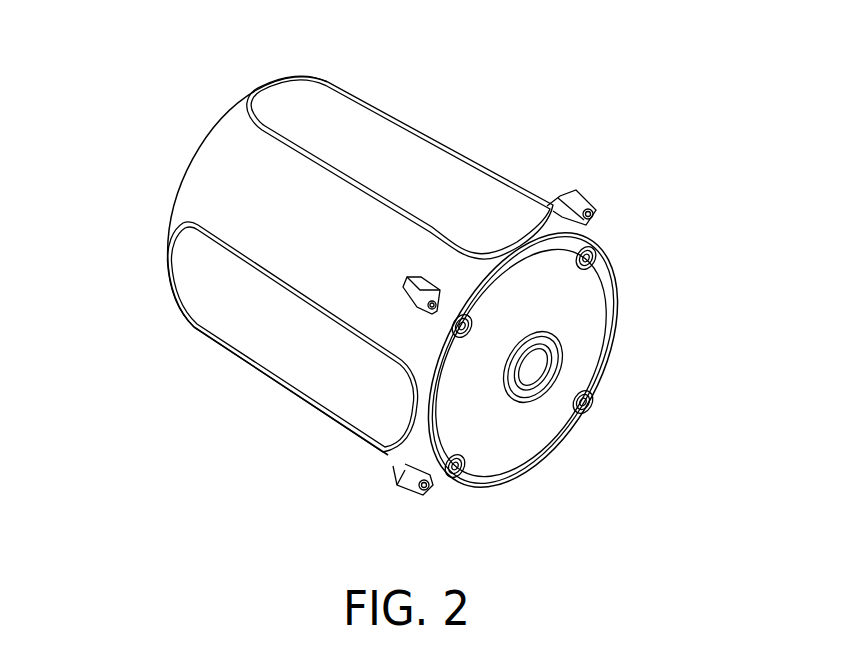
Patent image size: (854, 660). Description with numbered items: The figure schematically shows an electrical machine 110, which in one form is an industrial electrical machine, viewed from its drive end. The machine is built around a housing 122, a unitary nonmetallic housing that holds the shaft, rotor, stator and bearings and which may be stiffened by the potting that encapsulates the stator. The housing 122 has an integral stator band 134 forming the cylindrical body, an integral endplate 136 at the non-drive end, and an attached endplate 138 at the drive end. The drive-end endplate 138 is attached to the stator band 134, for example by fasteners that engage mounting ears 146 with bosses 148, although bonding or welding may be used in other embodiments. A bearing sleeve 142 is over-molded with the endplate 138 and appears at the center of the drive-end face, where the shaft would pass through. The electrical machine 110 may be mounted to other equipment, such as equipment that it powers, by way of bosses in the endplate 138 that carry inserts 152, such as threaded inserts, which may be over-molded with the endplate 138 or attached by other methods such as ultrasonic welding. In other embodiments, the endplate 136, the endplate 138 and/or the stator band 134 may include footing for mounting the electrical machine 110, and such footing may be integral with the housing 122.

The electrical machine 110 is at (652, 98).
The housing 122 is at (133, 348).
The stator band 134 is at (455, 146).
The endplate 136 is at (213, 121).
The endplate 138 is at (616, 334).
The bearing sleeve 142 is at (548, 334).
The mounting ears 146 is at (596, 214).
The bosses 148 is at (578, 193).
The inserts 152 is at (600, 258).